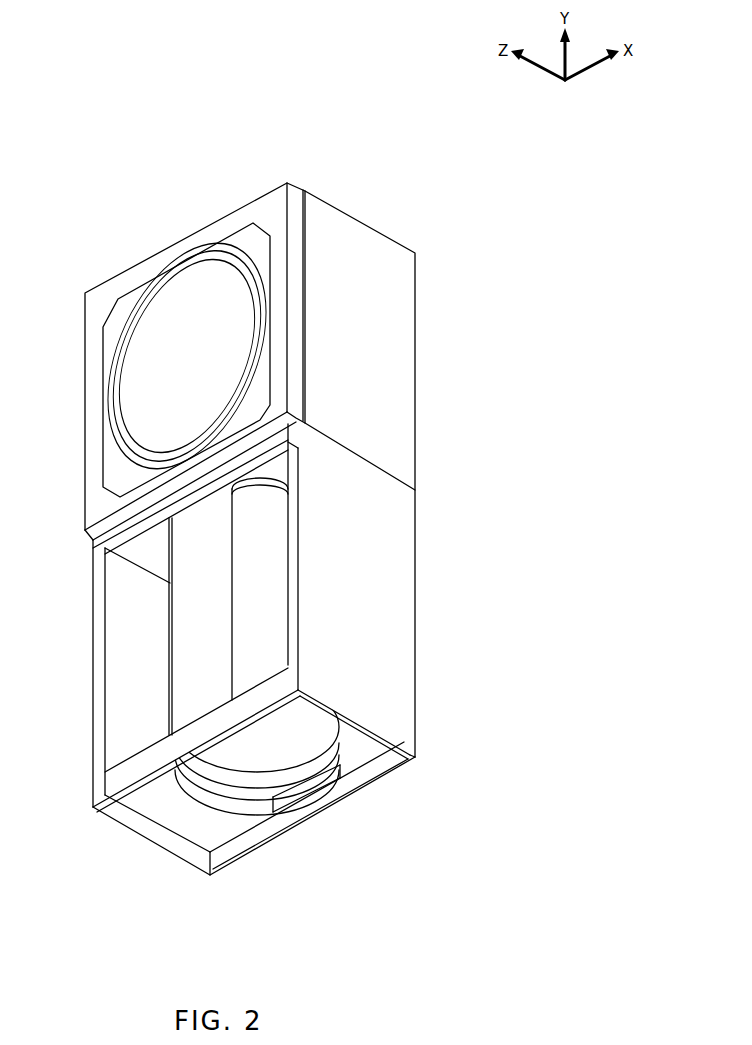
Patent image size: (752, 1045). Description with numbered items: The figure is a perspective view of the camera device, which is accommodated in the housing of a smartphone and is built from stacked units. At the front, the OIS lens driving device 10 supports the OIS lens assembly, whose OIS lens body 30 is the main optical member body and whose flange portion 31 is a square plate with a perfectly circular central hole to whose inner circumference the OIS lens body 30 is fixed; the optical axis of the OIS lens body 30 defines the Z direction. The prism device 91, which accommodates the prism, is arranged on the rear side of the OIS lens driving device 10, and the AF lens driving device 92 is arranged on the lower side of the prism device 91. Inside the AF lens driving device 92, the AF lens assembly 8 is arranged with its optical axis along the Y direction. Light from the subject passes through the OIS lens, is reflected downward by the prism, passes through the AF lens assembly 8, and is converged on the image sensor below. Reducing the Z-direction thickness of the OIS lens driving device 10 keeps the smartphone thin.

The OIS lens driving device 10 is at (72, 285).
The prism device 91 is at (415, 400).
The AF lens driving device 92 is at (415, 658).
The OIS lens body 30 is at (178, 308).
The flange portion 31 is at (254, 254).
The AF lens assembly 8 is at (267, 752).